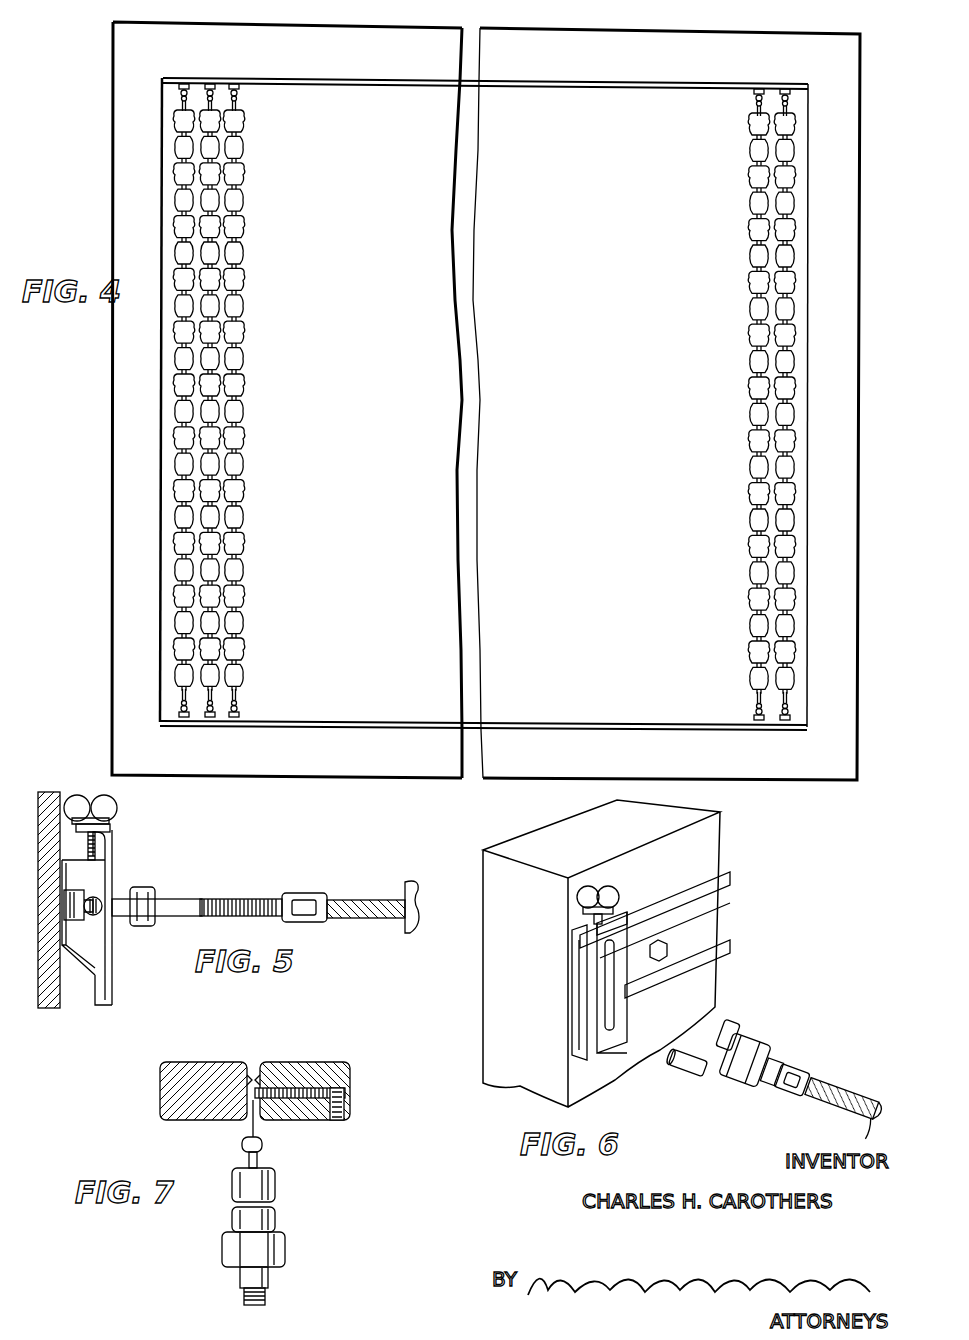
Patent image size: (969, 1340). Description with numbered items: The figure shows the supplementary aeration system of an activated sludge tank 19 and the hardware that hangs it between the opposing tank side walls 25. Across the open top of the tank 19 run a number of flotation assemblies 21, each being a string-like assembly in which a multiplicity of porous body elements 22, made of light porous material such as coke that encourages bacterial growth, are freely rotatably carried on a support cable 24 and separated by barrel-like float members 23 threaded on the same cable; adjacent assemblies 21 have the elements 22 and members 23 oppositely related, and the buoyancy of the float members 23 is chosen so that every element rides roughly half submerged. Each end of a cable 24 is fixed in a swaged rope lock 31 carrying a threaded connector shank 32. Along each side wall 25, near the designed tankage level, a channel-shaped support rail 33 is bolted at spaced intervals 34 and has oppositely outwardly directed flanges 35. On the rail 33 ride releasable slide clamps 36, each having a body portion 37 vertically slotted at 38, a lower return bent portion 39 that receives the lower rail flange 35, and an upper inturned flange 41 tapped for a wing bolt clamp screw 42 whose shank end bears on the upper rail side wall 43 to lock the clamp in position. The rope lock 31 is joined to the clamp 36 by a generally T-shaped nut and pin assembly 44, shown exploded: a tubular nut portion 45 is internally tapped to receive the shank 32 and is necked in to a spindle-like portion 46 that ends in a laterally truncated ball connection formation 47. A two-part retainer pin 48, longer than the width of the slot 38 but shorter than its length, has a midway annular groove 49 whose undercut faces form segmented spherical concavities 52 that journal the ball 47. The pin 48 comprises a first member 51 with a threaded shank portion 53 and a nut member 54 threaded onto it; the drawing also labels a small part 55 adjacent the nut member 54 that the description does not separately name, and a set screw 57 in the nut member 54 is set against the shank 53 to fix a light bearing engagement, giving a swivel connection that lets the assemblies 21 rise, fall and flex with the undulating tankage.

In FIG. 4, the tank 19 is at (116, 570).
In FIG. 4, the flotation assembly 21 is at (208, 150).
In FIG. 4, the porous body element 22 is at (182, 228).
In FIG. 4, the float member 23 is at (240, 345).
In FIG. 5, the float member 23 is at (410, 882).
In FIG. 4, the support cable 24 is at (212, 109).
In FIG. 5, the support cable 24 is at (350, 900).
In FIG. 6, the support cable 24 is at (838, 1098).
In FIG. 4, the tank side wall 25 is at (483, 33).
In FIG. 5, the tank side wall 25 is at (52, 792).
In FIG. 6, the tank side wall 25 is at (483, 958).
In FIG. 4, the swaged rope lock 31 is at (236, 92).
In FIG. 5, the swaged rope lock 31 is at (305, 893).
In FIG. 6, the swaged rope lock 31 is at (800, 1072).
In FIG. 5, the threaded connector shank 32 is at (250, 897).
In FIG. 7, the threaded connector shank 32 is at (265, 1298).
In FIG. 6, the threaded connector shank 32 is at (770, 1082).
In FIG. 4, the support rail 33 is at (370, 88).
In FIG. 5, the support rail 33 is at (62, 920).
In FIG. 6, the support rail 33 is at (570, 970).
In FIG. 5, the bolt 34 is at (68, 902).
In FIG. 6, the bolt 34 is at (700, 928).
In FIG. 5, the rail flange 35 is at (113, 845).
In FIG. 6, the rail flange 35 is at (572, 948).
In FIG. 5, the slide clamp 36 is at (113, 940).
In FIG. 6, the slide clamp 36 is at (618, 1055).
In FIG. 5, the body portion 37 is at (112, 970).
In FIG. 6, the body portion 37 is at (640, 975).
In FIG. 5, the slot 38 is at (113, 870).
In FIG. 6, the slot 38 is at (618, 1035).
In FIG. 5, the return bent portion 39 is at (100, 1004).
In FIG. 6, the return bent portion 39 is at (585, 1062).
In FIG. 5, the inturned flange 41 is at (78, 828).
In FIG. 6, the inturned flange 41 is at (612, 920).
In FIG. 5, the wing bolt clamp screw 42 is at (118, 806).
In FIG. 6, the wing bolt clamp screw 42 is at (600, 885).
In FIG. 5, the upper rail side wall 43 is at (86, 860).
In FIG. 6, the upper rail side wall 43 is at (572, 1000).
In FIG. 5, the T-shaped nut and pin assembly 44 is at (181, 897).
In FIG. 7, the T-shaped nut and pin assembly 44 is at (352, 1108).
In FIG. 6, the T-shaped nut and pin assembly 44 is at (760, 1043).
In FIG. 5, the tubular nut portion 45 is at (192, 917).
In FIG. 7, the tubular nut portion 45 is at (268, 1274).
In FIG. 6, the tubular nut portion 45 is at (775, 1062).
In FIG. 5, the spindle-like portion 46 is at (93, 916).
In FIG. 7, the spindle-like portion 46 is at (257, 1160).
In FIG. 7, the ball connection formation 47 is at (242, 1142).
In FIG. 5, the retainer pin 48 is at (103, 897).
In FIG. 7, the retainer pin 48 is at (210, 1082).
In FIG. 6, the retainer pin 48 is at (693, 1078).
In FIG. 7, the annular groove 49 is at (263, 1062).
In FIG. 6, the annular groove 49 is at (705, 1037).
In FIG. 7, the first member 51 is at (180, 1112).
In FIG. 7, the segmented spherical concavity 52 is at (251, 1063).
In FIG. 7, the threaded shank portion 53 is at (292, 1088).
In FIG. 7, the nut member 54 is at (345, 1064).
In FIG. 7, the set screw 55 is at (344, 1090).
In FIG. 7, the set screw 57 is at (343, 1120).